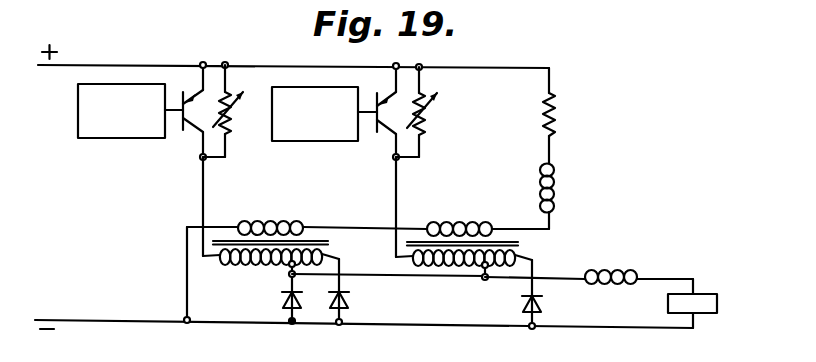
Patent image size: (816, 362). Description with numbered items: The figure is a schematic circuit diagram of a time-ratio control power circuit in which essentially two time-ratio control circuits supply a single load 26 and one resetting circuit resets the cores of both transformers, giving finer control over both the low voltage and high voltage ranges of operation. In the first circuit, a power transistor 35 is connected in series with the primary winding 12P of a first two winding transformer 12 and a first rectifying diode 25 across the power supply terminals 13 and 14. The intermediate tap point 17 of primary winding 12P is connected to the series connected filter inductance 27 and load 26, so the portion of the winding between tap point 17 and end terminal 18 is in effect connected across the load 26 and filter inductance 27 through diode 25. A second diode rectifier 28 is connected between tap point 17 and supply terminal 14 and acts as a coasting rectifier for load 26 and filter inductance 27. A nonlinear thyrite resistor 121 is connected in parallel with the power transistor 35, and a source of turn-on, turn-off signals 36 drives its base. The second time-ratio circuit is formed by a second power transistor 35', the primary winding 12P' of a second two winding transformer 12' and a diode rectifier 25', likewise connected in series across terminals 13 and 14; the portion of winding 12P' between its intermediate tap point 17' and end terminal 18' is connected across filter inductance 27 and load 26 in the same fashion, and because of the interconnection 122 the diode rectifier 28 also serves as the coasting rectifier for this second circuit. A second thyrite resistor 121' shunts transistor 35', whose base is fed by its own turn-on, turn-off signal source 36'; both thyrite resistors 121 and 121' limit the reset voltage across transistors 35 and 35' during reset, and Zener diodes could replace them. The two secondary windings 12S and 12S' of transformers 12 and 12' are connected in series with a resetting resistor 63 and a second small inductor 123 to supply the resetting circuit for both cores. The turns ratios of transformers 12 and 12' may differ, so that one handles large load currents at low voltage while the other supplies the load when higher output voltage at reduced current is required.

The power supply terminal 13 is at (72, 65).
The power supply terminal 14 is at (85, 320).
The turn-on turn-off signal source 36 is at (121, 125).
The power transistor 35 is at (185, 112).
The thyrite resistor 121 is at (236, 109).
The turn-on turn-off signal source 36' is at (315, 127).
The power transistor 35' is at (378, 113).
The thyrite resistor 121' is at (435, 110).
The resetting resistor 63 is at (556, 101).
The small inductor 123 is at (555, 183).
The two winding transformer 12 is at (268, 226).
The secondary winding 12S is at (305, 265).
The primary winding 12P is at (262, 224).
The end terminal 18 is at (342, 262).
The intermediate tap point 17 is at (371, 276).
The diode rectifier 28 is at (282, 302).
The rectifying diode 25 is at (351, 307).
The two winding transformer 12' is at (460, 227).
The secondary winding 12S' is at (488, 221).
The primary winding 12P' is at (455, 227).
The end terminal 18' is at (539, 265).
The interconnection 122 is at (481, 279).
The intermediate tap point 17' is at (535, 287).
The diode rectifier 25' is at (550, 311).
The filter inductance 27 is at (633, 268).
The load 26 is at (714, 294).